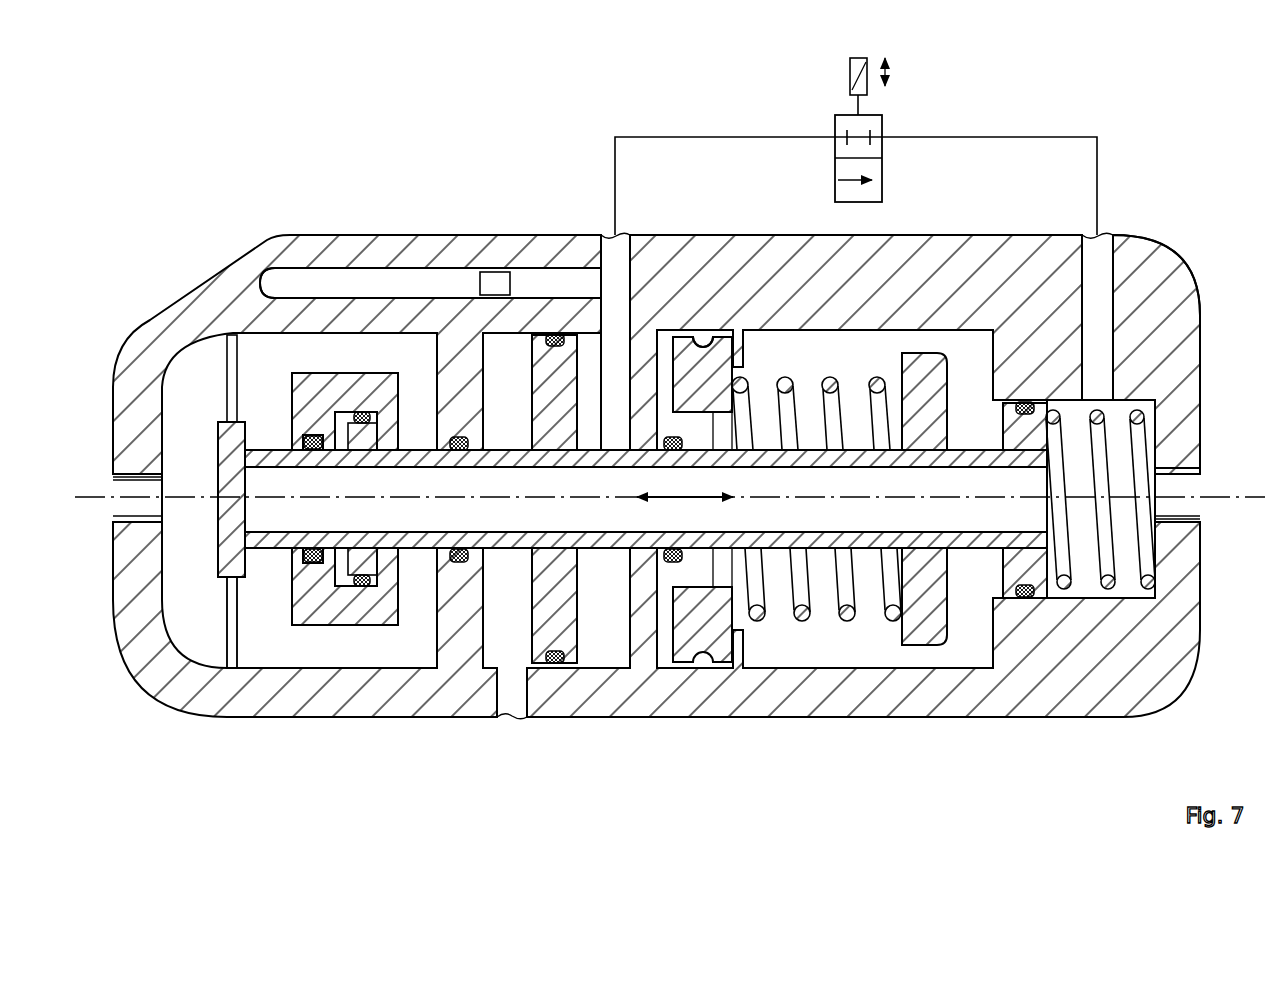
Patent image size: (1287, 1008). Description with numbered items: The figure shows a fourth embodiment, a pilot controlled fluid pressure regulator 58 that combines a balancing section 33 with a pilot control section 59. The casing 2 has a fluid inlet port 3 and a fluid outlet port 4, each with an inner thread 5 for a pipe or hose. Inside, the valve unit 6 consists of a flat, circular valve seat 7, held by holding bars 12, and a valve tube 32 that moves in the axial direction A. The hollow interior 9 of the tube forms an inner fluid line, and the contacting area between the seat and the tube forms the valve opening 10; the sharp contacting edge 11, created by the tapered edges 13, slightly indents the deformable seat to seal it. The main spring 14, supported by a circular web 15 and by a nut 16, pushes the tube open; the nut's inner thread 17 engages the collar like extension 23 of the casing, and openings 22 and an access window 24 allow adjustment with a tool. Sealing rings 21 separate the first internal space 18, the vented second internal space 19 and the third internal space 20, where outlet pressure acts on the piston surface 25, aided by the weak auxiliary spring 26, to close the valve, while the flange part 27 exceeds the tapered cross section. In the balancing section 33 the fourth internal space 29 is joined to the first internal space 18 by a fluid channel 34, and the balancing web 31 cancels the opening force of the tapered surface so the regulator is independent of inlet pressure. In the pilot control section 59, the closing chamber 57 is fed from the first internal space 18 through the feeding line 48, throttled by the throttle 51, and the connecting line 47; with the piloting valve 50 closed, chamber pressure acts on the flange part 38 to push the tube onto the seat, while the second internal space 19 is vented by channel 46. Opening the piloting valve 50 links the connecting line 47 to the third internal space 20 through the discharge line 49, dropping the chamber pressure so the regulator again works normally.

The casing 2 is at (1125, 232).
The fluid inlet port 3 is at (127, 492).
The fluid outlet port 4 is at (1180, 490).
The inner thread 5 is at (143, 513).
The valve unit 6 is at (206, 449).
The valve seat 7 is at (222, 437).
The hollow interior 9 is at (646, 499).
The valve opening 10 is at (258, 445).
The contacting edge 11 is at (240, 690).
The holding bars 12 is at (230, 367).
The tapered edges 13 is at (262, 680).
The main spring 14 is at (797, 625).
The circular web 15 is at (922, 650).
The nut 16 is at (725, 334).
The inner thread 17 is at (672, 392).
The first internal space 18 is at (227, 500).
The second internal space 19 is at (736, 500).
The third internal space 20 is at (1100, 499).
The sealing rings 21 is at (315, 562).
The openings 22 is at (695, 352).
The collar like extension 23 is at (705, 668).
The access window 24 is at (715, 232).
The piston surface 25 is at (1048, 612).
The auxiliary spring 26 is at (1105, 612).
The flange part 27 is at (1008, 592).
The fourth internal space 29 is at (360, 586).
The balancing web 31 is at (366, 400).
The valve tube 32 is at (965, 558).
The balancing section 33 is at (394, 726).
The fluid channel 34 is at (343, 372).
The flange part 38 is at (570, 672).
The channel 46 is at (512, 705).
The connecting line 47 is at (612, 245).
The feeding line 48 is at (418, 283).
The discharge line 49 is at (1093, 272).
The piloting valve 50 is at (882, 117).
The throttle 51 is at (495, 272).
The closing chamber 57 is at (603, 608).
The pilot controlled fluid pressure regulator 58 is at (1180, 213).
The pilot control section 59 is at (572, 733).
The axial direction A is at (690, 505).